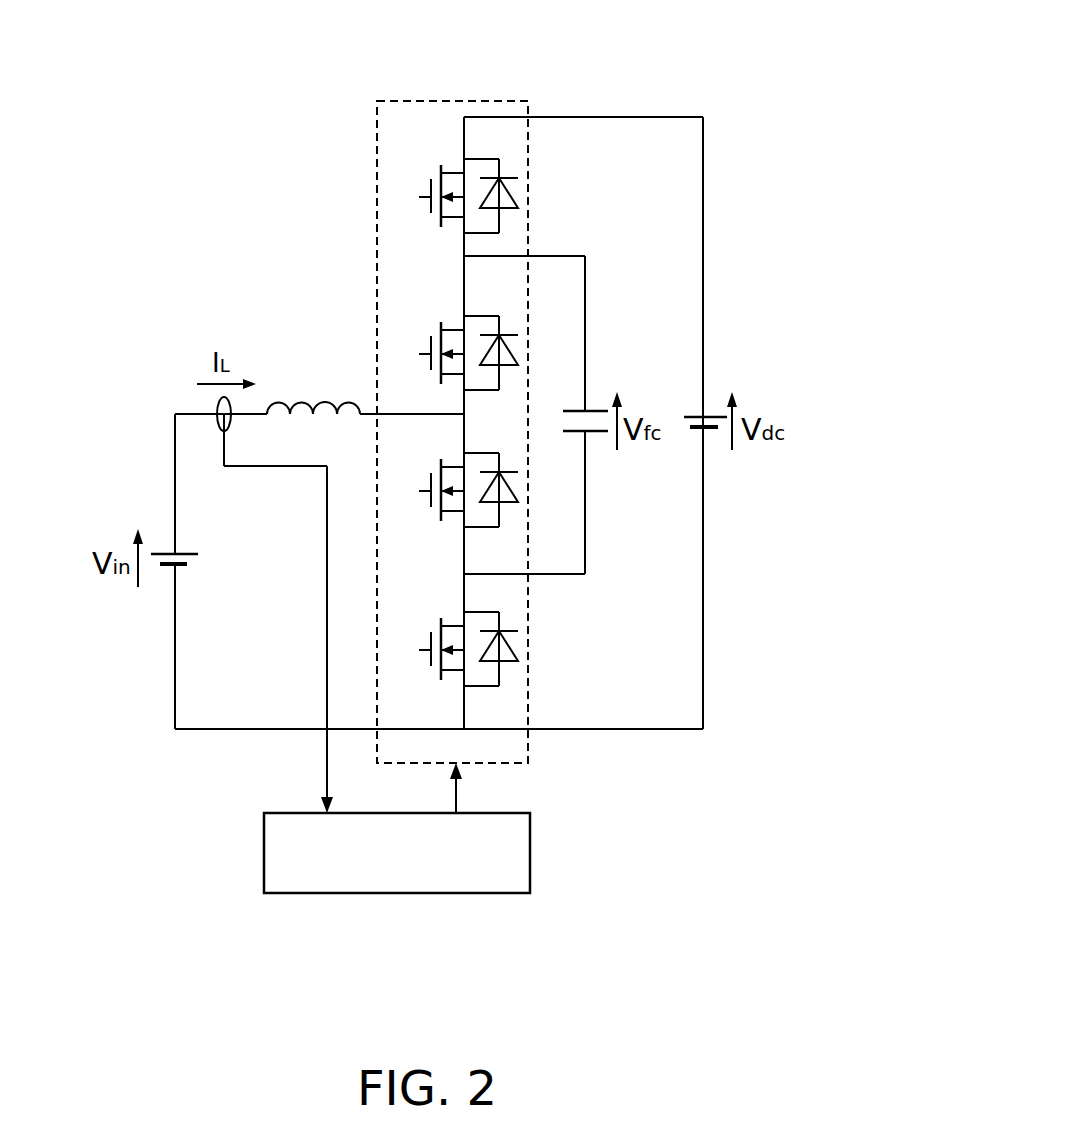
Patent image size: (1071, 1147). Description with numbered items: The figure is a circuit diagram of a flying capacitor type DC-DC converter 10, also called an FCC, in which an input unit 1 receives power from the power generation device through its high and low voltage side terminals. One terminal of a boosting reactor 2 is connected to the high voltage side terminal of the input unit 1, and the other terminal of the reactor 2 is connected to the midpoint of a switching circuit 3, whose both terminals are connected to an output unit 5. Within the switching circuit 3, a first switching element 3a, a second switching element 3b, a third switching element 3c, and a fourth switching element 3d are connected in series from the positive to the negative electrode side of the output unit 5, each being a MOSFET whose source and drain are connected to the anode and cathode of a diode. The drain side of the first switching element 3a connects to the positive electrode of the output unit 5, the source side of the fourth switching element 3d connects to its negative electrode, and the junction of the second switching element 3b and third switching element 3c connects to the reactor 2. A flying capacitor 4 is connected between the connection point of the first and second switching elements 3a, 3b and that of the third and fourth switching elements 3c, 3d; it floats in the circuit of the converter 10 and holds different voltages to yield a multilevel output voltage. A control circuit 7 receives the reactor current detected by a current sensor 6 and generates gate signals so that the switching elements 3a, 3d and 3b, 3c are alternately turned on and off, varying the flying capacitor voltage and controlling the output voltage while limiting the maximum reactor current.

The input unit 1 is at (191, 550).
The boosting reactor 2 is at (307, 395).
The switching circuit 3 is at (457, 100).
The first switching element 3a is at (436, 168).
The second switching element 3b is at (436, 325).
The third switching element 3c is at (436, 515).
The fourth switching element 3d is at (436, 674).
The flying capacitor 4 is at (594, 409).
The output unit 5 is at (710, 415).
The current sensor 6 is at (216, 425).
The control circuit 7 is at (533, 853).
The DC-DC converter 10 is at (659, 99).